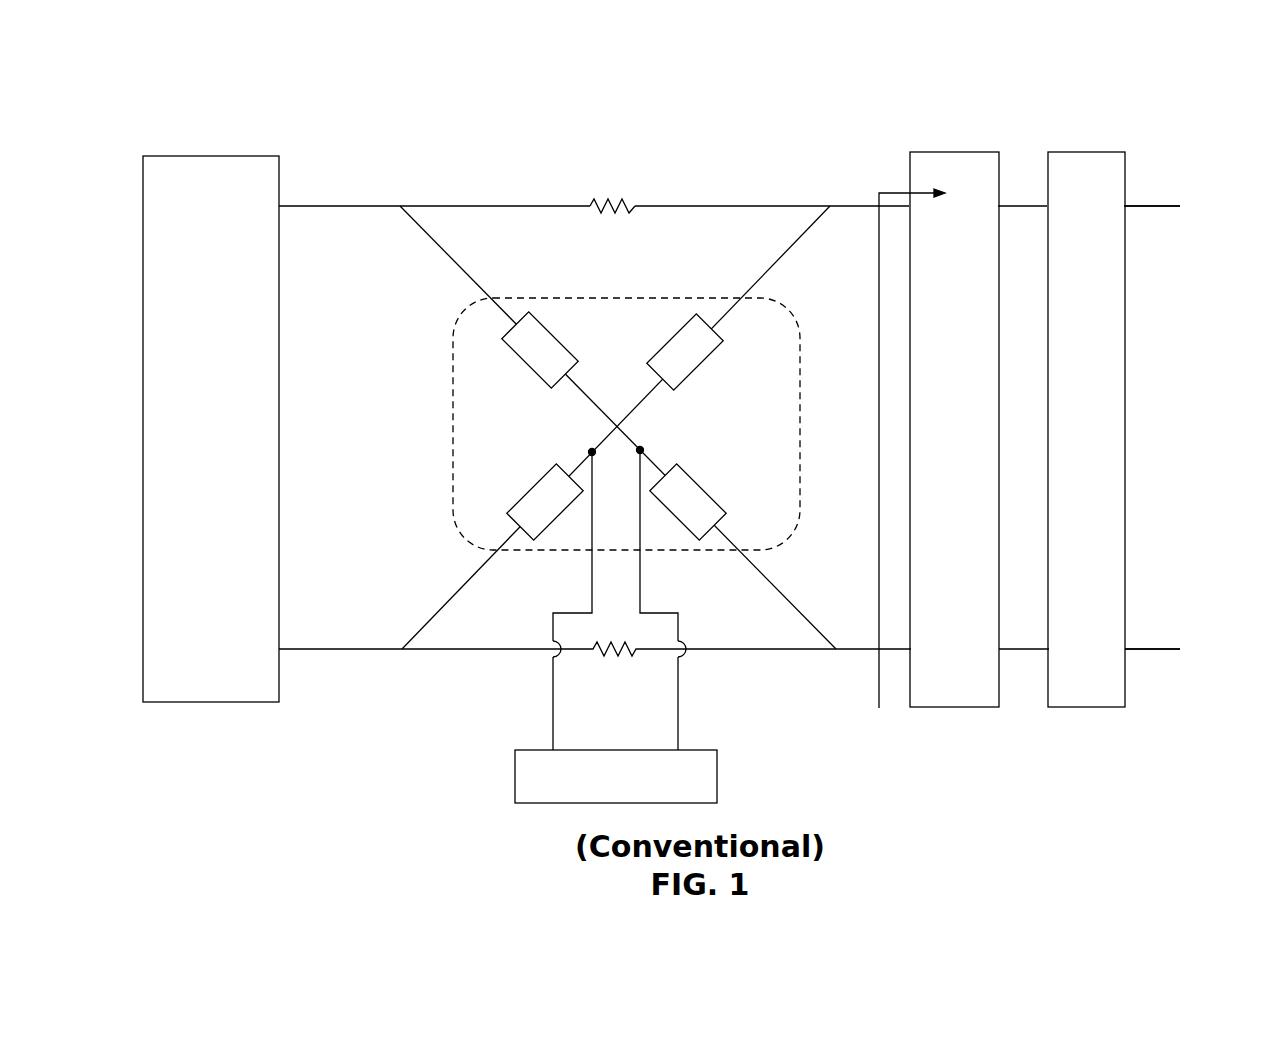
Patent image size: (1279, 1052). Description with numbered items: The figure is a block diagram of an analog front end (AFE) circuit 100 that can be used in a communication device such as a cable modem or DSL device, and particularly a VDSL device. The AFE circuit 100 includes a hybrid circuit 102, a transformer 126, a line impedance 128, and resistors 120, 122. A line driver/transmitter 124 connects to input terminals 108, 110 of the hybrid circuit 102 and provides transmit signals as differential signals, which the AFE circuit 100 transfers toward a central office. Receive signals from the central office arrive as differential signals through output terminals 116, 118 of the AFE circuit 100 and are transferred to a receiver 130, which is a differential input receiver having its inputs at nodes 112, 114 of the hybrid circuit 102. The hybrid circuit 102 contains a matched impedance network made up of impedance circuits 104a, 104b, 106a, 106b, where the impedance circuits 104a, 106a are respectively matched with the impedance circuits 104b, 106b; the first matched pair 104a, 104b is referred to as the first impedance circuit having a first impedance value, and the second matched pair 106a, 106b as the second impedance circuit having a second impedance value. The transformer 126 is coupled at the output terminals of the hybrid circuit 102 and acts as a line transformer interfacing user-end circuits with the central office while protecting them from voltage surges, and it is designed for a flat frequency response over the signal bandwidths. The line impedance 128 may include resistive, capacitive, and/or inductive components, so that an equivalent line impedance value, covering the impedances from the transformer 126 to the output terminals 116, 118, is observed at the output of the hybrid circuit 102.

The analog front end (AFE) circuit 100 is at (1278, 39).
The hybrid circuit 102 is at (693, 297).
The impedance circuit 104a is at (712, 361).
The impedance circuit 104b is at (712, 462).
The impedance circuit 106a is at (517, 362).
The impedance circuit 106b is at (520, 463).
The input terminal 108 is at (400, 205).
The input terminal 110 is at (402, 650).
The node 112 is at (592, 568).
The node 114 is at (640, 568).
The output terminal 116 is at (1162, 205).
The output terminal 118 is at (1178, 650).
The resistor 120 is at (608, 172).
The resistor 122 is at (620, 660).
The line driver/transmitter 124 is at (223, 156).
The transformer 126 is at (952, 151).
The line impedance 128 is at (1088, 151).
The receiver 130 is at (717, 777).